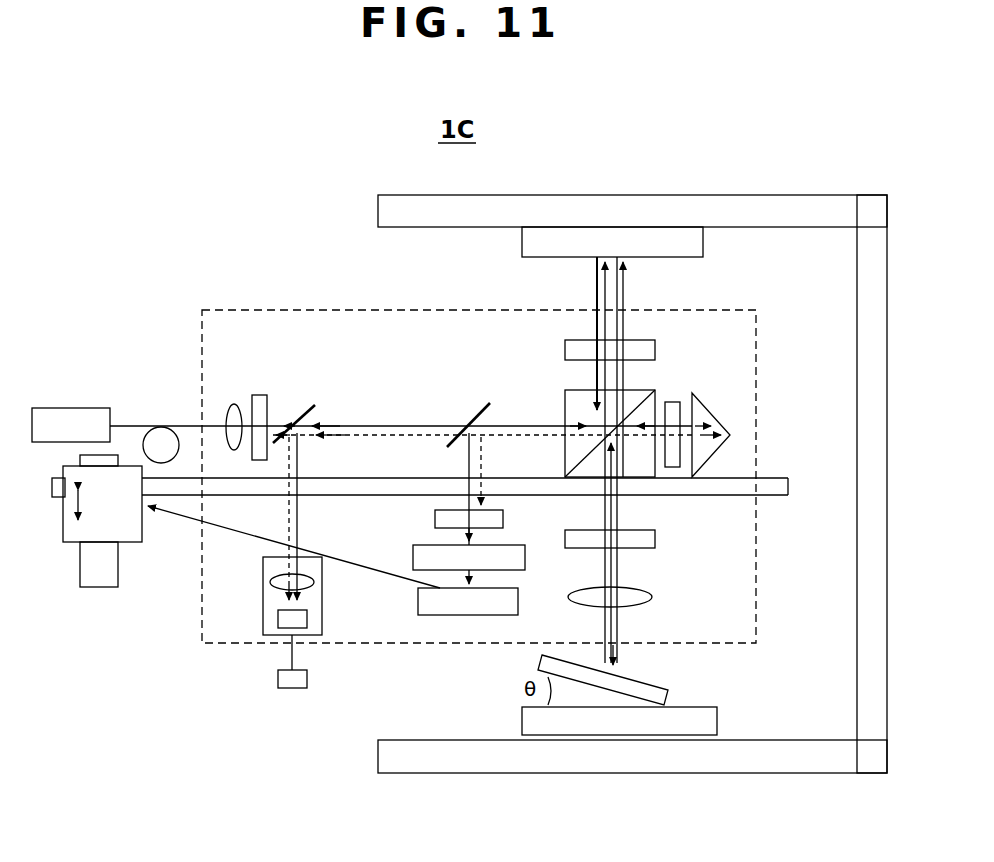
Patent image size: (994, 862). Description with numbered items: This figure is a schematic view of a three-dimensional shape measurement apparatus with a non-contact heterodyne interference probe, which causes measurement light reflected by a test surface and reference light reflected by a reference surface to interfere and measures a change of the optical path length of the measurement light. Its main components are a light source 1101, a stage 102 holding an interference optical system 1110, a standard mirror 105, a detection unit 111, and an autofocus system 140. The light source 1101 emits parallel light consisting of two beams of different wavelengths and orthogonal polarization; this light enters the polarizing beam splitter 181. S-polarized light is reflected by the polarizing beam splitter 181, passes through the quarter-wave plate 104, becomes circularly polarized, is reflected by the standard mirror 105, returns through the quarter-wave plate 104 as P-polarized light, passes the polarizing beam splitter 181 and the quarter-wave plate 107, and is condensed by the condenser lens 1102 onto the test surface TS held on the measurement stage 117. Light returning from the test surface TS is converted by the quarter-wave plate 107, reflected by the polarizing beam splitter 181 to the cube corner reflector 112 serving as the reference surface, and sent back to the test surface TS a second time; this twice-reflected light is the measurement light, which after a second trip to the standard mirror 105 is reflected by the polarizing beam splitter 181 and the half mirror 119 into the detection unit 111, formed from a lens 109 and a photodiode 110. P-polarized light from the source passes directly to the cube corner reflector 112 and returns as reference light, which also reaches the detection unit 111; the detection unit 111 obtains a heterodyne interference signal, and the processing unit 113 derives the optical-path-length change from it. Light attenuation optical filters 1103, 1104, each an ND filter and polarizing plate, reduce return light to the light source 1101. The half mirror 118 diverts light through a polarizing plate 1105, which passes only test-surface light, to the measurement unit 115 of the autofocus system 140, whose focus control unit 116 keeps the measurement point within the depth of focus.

The light source 1101 is at (62, 408).
The interference optical system 1110 is at (240, 308).
The light attenuation optical filter 1104 is at (261, 395).
The half mirror 119 is at (315, 405).
The half mirror 118 is at (483, 403).
The λ/4 plate 104 is at (565, 349).
The polarizing beam splitter 181 is at (640, 389).
The light attenuation optical filter 1103 is at (674, 400).
The cube corner reflector 112 is at (733, 413).
The standard mirror 105 is at (706, 247).
The stage 102 is at (776, 477).
The polarizing plate 1105 is at (435, 518).
The measurement unit 115 is at (538, 529).
The focus control unit 116 is at (512, 590).
The λ/4 plate 107 is at (656, 538).
The condenser lens 1102 is at (654, 596).
The lens 109 is at (268, 580).
The photodiode 110 is at (321, 618).
The detection unit 111 is at (264, 623).
The processing unit 113 is at (308, 678).
The autofocus system 140 is at (442, 626).
The test surface TS is at (660, 684).
The measurement stage 117 is at (718, 713).